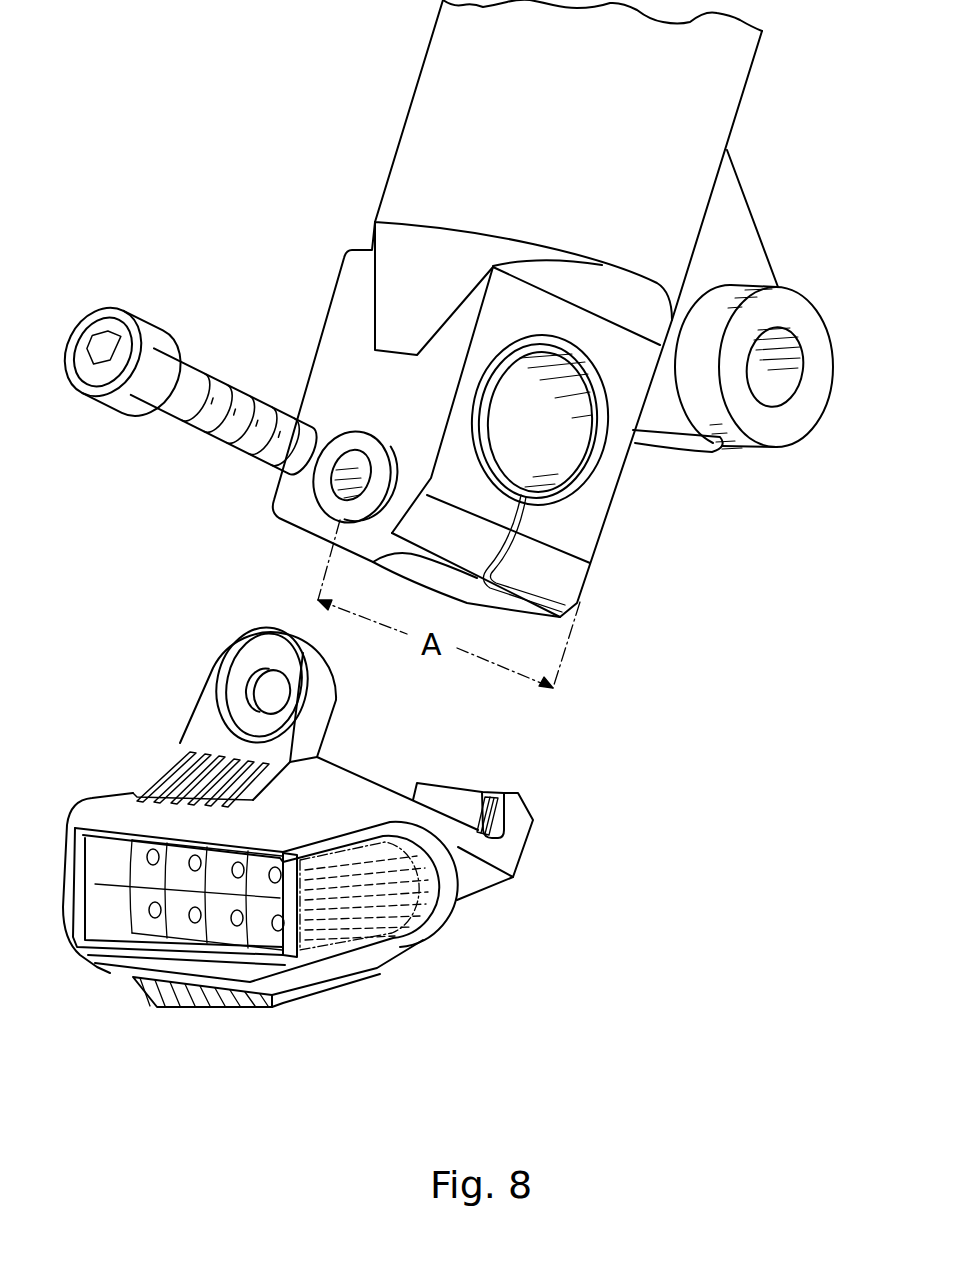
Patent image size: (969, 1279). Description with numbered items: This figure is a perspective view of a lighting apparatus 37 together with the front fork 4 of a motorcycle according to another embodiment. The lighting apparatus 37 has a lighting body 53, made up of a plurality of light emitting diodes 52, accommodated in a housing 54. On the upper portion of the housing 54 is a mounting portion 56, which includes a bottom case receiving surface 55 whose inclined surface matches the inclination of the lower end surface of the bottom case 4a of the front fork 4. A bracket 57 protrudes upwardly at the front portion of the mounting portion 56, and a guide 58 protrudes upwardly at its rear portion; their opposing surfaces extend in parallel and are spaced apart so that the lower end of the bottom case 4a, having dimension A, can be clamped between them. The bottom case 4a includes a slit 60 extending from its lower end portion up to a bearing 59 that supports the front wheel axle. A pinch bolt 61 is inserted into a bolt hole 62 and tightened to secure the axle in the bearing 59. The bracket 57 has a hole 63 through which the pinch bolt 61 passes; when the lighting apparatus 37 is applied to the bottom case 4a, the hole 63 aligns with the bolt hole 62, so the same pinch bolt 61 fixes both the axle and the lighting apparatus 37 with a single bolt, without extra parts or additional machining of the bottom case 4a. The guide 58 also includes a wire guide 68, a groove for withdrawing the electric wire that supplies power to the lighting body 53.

The front fork 4 is at (497, 80).
The bottom case 4a is at (597, 525).
The lighting apparatus 37 is at (395, 976).
The light emitting diodes 52 is at (147, 860).
The lighting body 53 is at (257, 948).
The housing 54 is at (112, 810).
The bottom case receiving surface 55 is at (373, 790).
The mounting portion 56 is at (513, 877).
The bracket 57 is at (323, 697).
The guide 58 is at (523, 827).
The bearing 59 is at (580, 463).
The slit 60 is at (583, 580).
The pinch bolt 61 is at (153, 397).
The bolt hole 62 is at (353, 460).
The hole 63 is at (257, 682).
The wire guide 68 is at (490, 798).